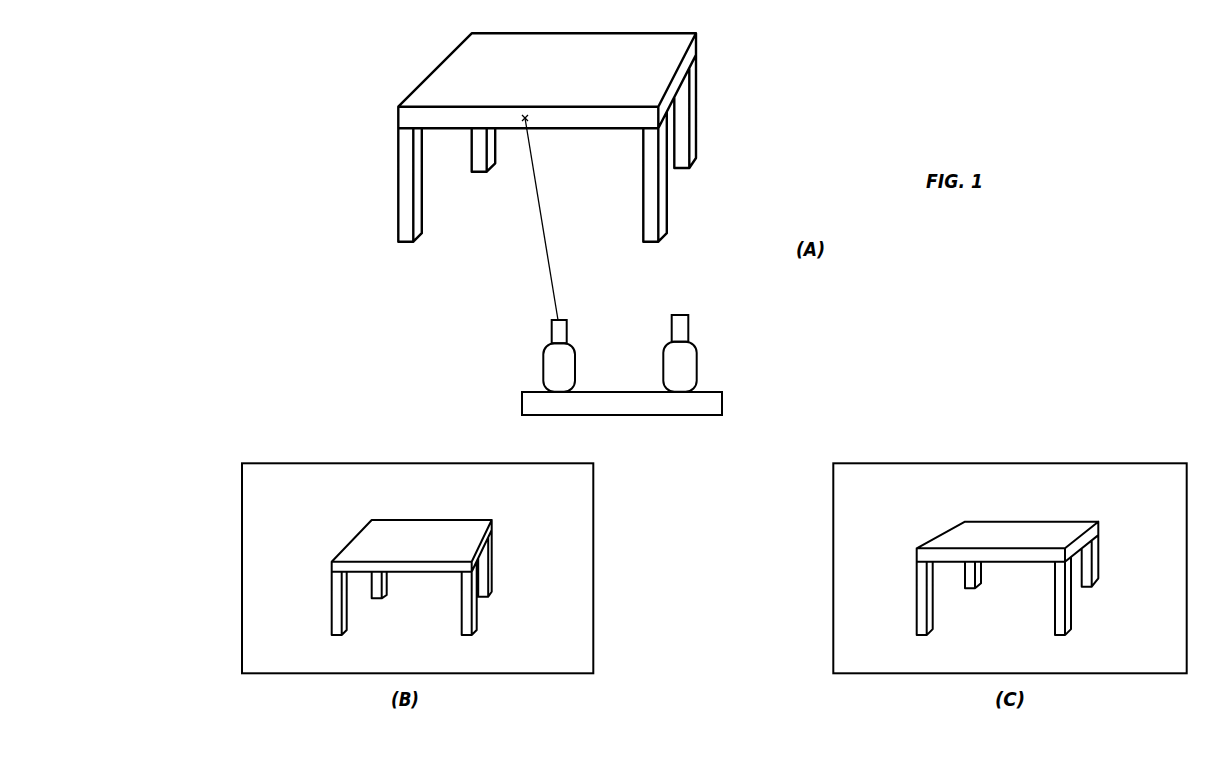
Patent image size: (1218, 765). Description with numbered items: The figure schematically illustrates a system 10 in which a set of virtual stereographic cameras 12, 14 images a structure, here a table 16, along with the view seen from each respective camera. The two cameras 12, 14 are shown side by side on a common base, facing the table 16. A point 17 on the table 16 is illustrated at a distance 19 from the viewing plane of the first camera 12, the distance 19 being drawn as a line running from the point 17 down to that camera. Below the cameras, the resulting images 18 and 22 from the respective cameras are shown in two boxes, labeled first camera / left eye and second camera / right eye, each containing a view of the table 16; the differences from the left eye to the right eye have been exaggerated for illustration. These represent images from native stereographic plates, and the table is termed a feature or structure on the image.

The system 10 is at (585, 365).
The stereographic camera 12 is at (575, 353).
The stereographic camera 14 is at (697, 350).
The table 16 is at (374, 174).
The point 17 is at (525, 112).
The resulting image 18 is at (241, 568).
The distance 19 is at (533, 193).
The resulting image 22 is at (832, 568).